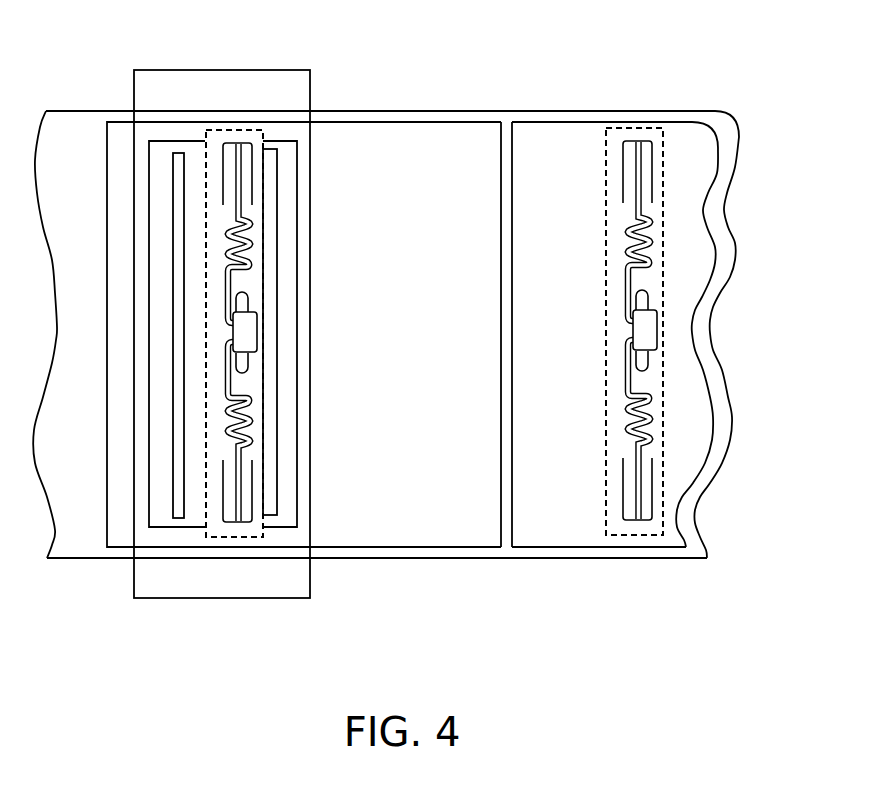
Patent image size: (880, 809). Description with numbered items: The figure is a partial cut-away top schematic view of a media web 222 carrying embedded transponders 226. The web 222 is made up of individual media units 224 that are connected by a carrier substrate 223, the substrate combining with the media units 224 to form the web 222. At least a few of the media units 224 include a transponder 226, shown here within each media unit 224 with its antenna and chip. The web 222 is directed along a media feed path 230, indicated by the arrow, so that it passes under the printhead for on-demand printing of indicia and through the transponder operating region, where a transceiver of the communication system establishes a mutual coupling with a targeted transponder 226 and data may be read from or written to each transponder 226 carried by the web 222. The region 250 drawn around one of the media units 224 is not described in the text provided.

The web 222 is at (611, 592).
The carrier substrate 223 is at (507, 548).
The media units 224 is at (449, 172).
The transponder 226 is at (247, 300).
The feed path 230 is at (438, 337).
The reader coupler / programming region 250 is at (160, 512).